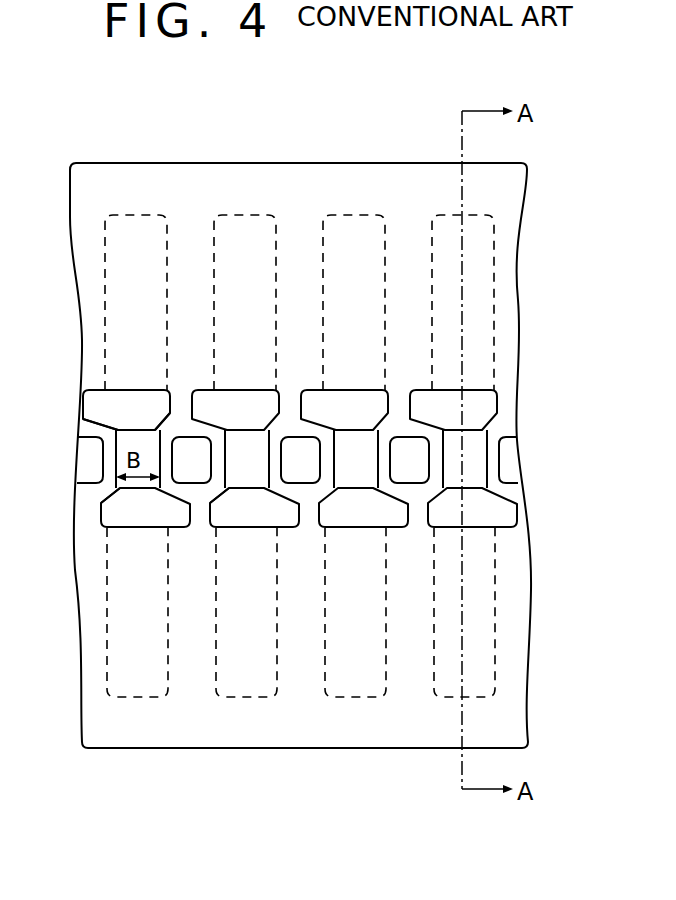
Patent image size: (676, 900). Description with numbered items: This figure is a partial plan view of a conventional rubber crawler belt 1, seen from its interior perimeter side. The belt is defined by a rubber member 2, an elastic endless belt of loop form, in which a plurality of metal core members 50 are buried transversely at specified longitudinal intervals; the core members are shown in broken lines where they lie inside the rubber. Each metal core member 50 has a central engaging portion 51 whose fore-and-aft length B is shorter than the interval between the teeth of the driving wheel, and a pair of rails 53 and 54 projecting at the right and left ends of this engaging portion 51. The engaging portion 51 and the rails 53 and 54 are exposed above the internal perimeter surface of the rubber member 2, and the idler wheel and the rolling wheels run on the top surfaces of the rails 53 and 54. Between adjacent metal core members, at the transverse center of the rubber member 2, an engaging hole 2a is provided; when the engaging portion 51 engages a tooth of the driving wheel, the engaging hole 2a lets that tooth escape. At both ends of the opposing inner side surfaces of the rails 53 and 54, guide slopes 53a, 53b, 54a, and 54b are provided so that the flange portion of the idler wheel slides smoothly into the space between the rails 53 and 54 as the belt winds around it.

The rubber crawler belt 1 is at (156, 162).
The rubber member 2 is at (257, 163).
The engaging hole 2a is at (283, 460).
The metal core member 50 is at (360, 213).
The engaging portion 51 is at (115, 460).
The rail 53 is at (93, 388).
The guide slope 53a is at (88, 428).
The guide slope 53b is at (173, 420).
The rail 54 is at (101, 509).
The guide slope 54a is at (106, 497).
The guide slope 54b is at (196, 494).